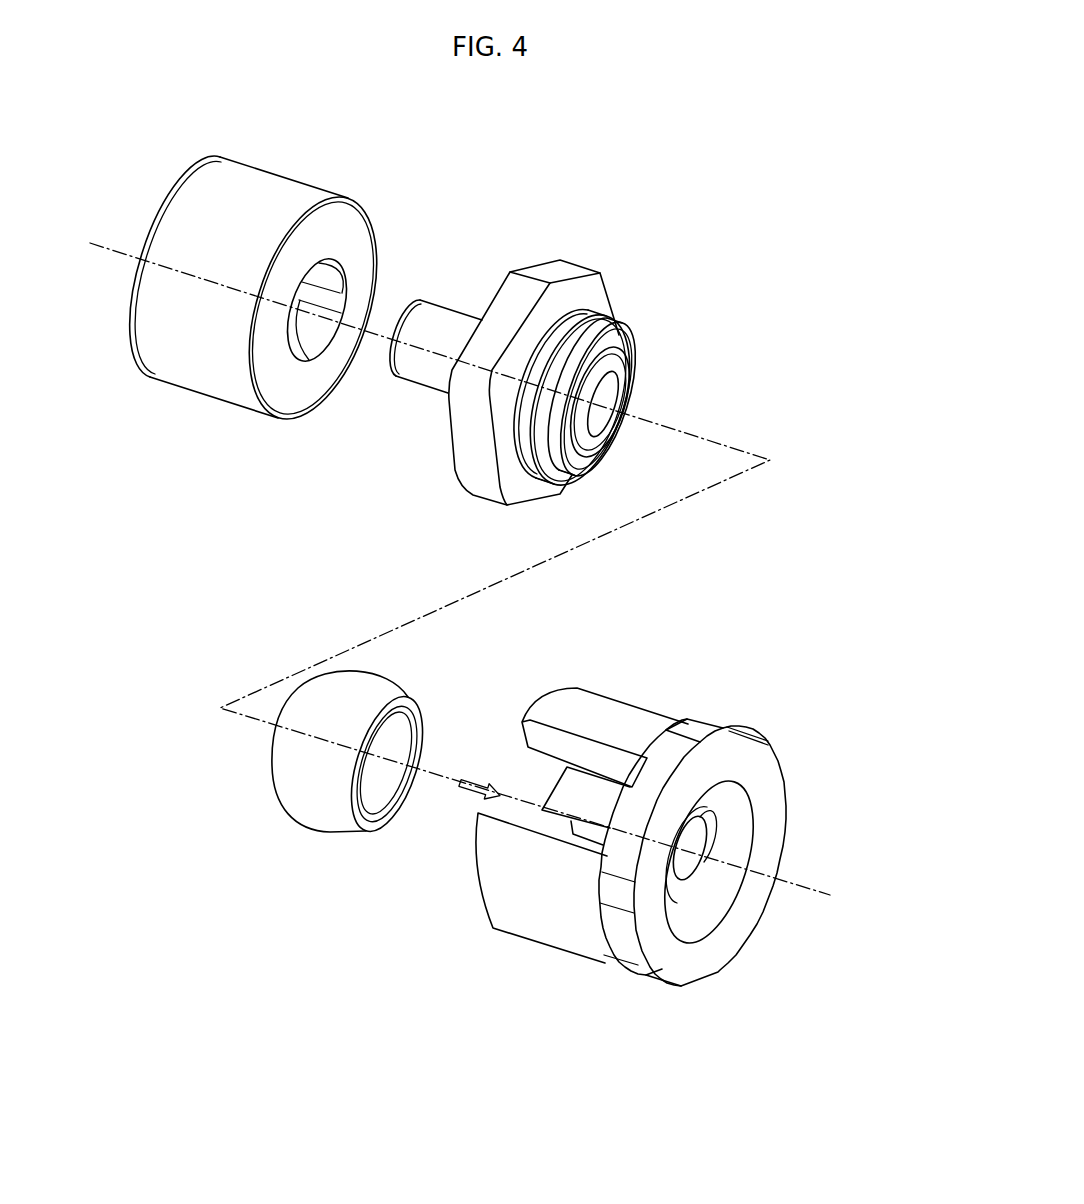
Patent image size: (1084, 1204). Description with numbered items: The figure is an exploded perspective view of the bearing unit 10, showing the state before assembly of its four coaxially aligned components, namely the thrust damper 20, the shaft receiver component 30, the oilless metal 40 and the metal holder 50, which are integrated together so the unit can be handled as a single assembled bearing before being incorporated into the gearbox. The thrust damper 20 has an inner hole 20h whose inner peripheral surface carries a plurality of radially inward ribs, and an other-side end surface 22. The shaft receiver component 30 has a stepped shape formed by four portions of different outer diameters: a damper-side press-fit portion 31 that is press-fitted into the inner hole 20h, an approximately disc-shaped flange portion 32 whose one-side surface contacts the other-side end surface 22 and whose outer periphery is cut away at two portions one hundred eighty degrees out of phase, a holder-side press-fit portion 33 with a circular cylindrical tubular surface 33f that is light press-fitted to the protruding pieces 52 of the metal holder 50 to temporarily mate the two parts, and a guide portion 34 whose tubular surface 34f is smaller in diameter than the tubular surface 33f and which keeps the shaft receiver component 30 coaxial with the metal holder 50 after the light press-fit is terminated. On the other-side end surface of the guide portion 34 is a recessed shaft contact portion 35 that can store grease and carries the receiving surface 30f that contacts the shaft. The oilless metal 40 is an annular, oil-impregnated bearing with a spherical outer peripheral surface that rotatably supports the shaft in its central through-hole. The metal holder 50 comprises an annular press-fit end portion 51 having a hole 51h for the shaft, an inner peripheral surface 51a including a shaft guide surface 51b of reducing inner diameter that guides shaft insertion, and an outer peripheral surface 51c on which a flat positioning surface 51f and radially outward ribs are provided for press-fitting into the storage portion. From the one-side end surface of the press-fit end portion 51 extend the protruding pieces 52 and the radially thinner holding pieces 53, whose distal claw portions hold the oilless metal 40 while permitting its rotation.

The bearing unit 10 is at (868, 183).
The thrust damper 20 is at (338, 178).
The other-side end surface 22 is at (357, 248).
The inner hole 20h is at (305, 329).
The shaft receiver component 30 is at (713, 300).
The damper-side press-fit portion 31 is at (447, 304).
The flange portion 32 is at (580, 260).
The holder-side press-fit portion 33 is at (589, 309).
The tubular surface 33f is at (530, 447).
The guide portion 34 is at (615, 320).
The tubular surface 34f is at (571, 448).
The shaft contact portion 35 is at (599, 436).
The receiving surface 30f is at (605, 385).
The oilless metal 40 is at (422, 684).
The metal holder 50 is at (813, 756).
The press-fit end portion 51 is at (787, 838).
The inner peripheral surface 51a is at (709, 906).
The shaft guide surface 51b is at (706, 927).
The outer peripheral surface 51c is at (707, 728).
The positioning surface 51f is at (680, 997).
The hole 51h is at (692, 863).
The protruding pieces 52 is at (619, 693).
The holding pieces 53 is at (551, 777).